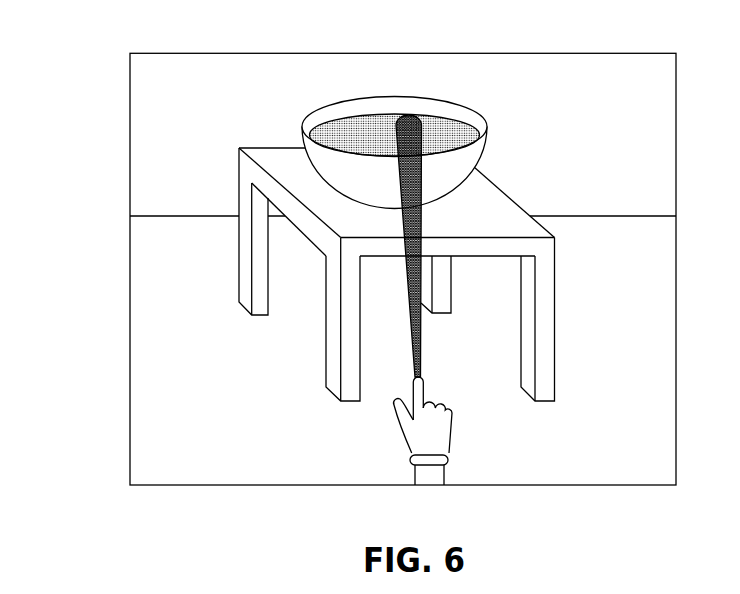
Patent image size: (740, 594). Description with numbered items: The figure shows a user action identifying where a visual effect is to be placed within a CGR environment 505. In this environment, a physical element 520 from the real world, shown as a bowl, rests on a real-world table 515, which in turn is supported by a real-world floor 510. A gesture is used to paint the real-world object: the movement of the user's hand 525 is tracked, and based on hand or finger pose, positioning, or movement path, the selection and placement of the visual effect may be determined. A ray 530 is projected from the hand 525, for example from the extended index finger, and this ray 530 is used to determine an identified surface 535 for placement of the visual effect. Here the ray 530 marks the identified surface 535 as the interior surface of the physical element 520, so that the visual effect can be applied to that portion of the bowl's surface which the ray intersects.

The CGR environment 505 is at (82, 95).
The real-world floor 510 is at (244, 454).
The real-world table 515 is at (555, 301).
The physical element 520 is at (484, 142).
The user's hand 525 is at (452, 433).
The ray 530 is at (421, 355).
The identified surface 535 is at (362, 135).